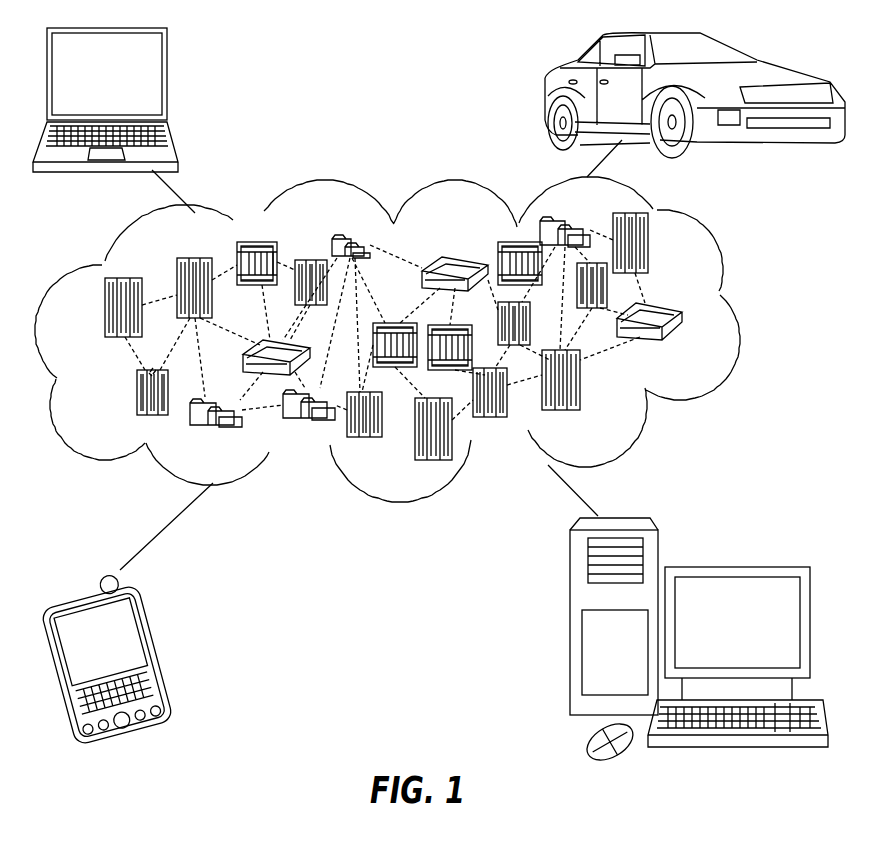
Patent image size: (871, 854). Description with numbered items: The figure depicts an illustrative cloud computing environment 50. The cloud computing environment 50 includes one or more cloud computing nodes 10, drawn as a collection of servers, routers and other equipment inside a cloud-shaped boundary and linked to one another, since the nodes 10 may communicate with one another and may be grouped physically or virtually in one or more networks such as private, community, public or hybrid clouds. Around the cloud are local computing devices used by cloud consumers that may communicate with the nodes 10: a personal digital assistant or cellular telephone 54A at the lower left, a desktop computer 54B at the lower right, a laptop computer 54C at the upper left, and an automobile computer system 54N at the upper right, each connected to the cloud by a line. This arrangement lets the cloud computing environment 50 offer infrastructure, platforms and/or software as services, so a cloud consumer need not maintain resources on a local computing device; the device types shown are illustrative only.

The cloud computing nodes 10 is at (439, 397).
The cloud computing environment 50 is at (740, 320).
The personal digital assistant or cellular telephone 54A is at (152, 648).
The desktop computer 54B is at (733, 567).
The laptop computer 54C is at (167, 80).
The automobile computer system 54N is at (545, 100).